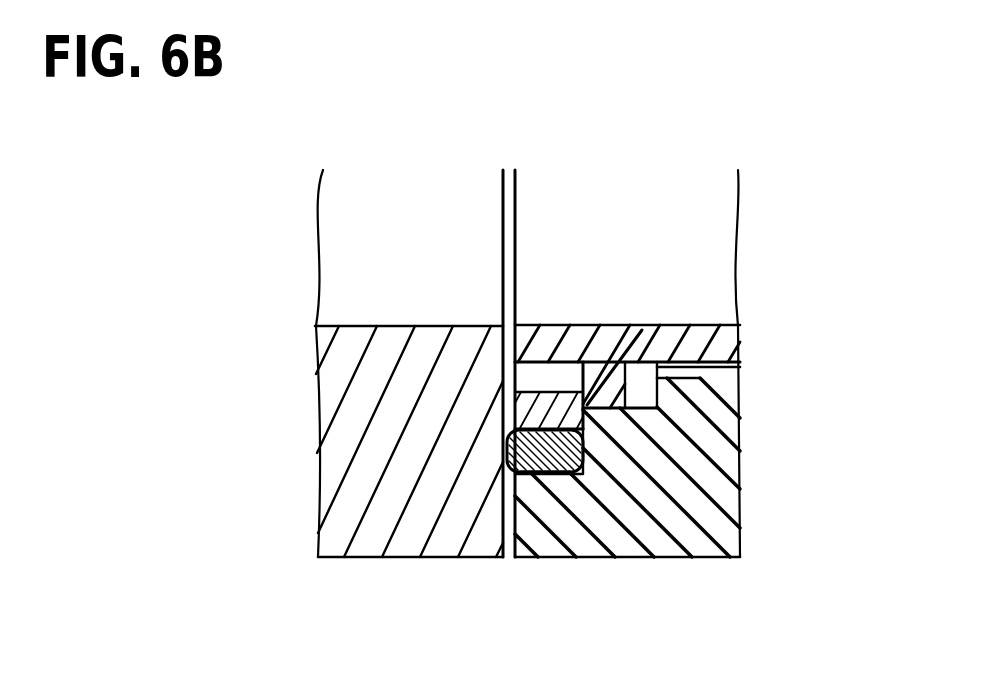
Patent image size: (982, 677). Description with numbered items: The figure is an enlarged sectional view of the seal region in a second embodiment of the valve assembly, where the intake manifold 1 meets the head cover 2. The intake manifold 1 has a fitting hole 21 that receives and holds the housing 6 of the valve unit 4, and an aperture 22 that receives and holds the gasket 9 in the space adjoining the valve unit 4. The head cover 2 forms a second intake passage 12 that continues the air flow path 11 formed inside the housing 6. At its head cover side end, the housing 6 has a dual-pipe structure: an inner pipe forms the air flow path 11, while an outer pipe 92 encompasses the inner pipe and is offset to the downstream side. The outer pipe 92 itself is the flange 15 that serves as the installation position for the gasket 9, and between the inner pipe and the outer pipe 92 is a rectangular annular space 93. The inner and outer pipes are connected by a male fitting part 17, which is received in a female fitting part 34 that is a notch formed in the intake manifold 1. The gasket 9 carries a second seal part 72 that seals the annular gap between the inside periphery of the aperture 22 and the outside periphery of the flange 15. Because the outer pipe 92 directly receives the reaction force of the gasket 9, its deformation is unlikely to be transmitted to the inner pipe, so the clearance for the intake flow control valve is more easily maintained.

The intake manifold 1 is at (722, 533).
The head cover 2 is at (337, 549).
The valve unit 4 is at (573, 386).
The housing 6 is at (700, 325).
The gasket 9 is at (503, 455).
The air flow path 11 is at (662, 218).
The second intake passage 12 is at (419, 209).
The flange 15 is at (584, 466).
The male fitting part 17 is at (738, 436).
The fitting hole 21 is at (700, 369).
The aperture 22 is at (545, 390).
The female fitting part 34 is at (640, 387).
The second seal part 72 is at (548, 473).
The outer pipe 92 is at (520, 410).
The rectangular annular space 93 is at (598, 409).